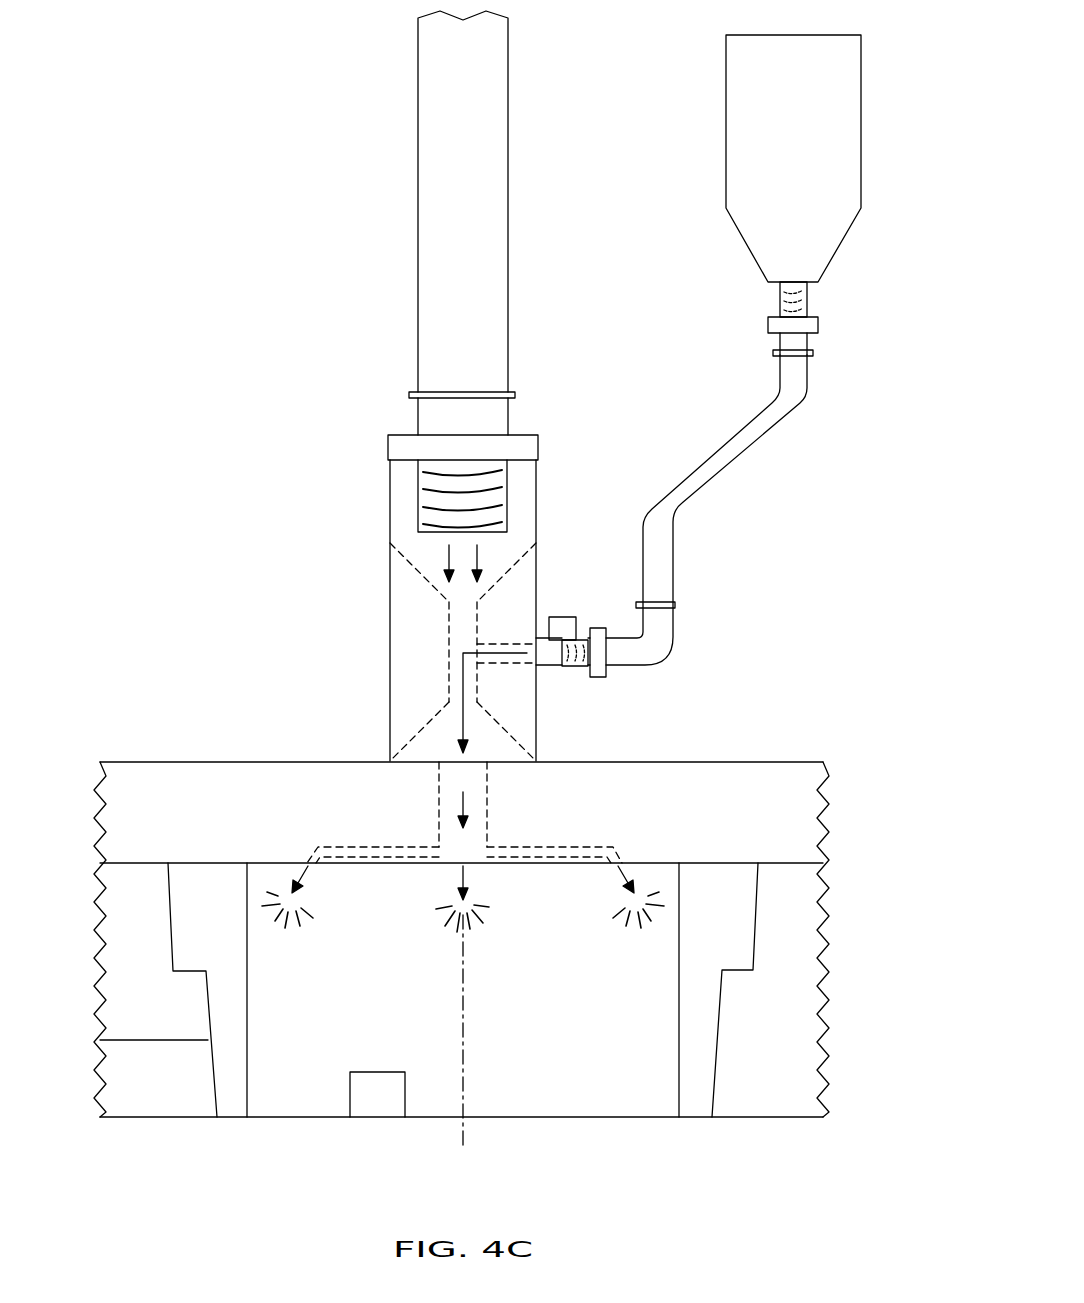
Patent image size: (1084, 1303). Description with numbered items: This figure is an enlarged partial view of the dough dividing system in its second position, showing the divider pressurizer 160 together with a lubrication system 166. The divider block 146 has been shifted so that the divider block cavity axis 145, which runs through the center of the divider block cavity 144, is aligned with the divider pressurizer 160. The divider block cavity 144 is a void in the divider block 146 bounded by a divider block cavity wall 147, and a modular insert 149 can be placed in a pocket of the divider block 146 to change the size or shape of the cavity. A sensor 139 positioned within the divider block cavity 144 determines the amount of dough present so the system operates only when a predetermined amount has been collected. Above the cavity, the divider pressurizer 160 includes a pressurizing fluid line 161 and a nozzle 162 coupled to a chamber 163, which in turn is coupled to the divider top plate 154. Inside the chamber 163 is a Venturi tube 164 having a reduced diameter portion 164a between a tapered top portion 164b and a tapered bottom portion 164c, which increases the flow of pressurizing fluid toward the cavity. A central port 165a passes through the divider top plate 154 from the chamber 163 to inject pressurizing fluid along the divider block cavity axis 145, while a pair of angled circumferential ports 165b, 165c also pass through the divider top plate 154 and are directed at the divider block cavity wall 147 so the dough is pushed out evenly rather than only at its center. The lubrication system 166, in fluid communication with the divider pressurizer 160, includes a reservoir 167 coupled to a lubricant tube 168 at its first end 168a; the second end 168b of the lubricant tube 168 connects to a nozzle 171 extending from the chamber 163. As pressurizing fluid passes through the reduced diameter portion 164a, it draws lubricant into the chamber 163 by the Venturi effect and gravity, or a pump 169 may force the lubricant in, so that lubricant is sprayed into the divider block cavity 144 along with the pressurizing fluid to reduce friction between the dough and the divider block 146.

The sensor 139 is at (378, 1103).
The divider block cavity 144 is at (642, 1098).
The divider block cavity axis 145 is at (463, 1137).
The divider block 146 is at (122, 988).
The divider block cavity wall 147 is at (247, 1098).
The modular insert 149 is at (200, 883).
The divider top plate 154 is at (735, 783).
The divider pressurizer 160 is at (364, 182).
The pressurizing fluid line 161 is at (418, 292).
The nozzle 162 is at (507, 492).
The chamber 163 is at (390, 603).
The Venturi tube 164 is at (376, 524).
The reduced diameter portion 164a is at (449, 640).
The tapered top portion 164b is at (405, 562).
The tapered bottom portion 164c is at (408, 745).
The central port 165a is at (487, 778).
The circumferential port 165b is at (312, 845).
The circumferential port 165c is at (614, 845).
The lubrication system 166 is at (892, 193).
The reservoir 167 is at (726, 128).
The lubricant tube 168 is at (745, 465).
The first end 168a is at (808, 300).
The second end 168b is at (597, 677).
The pump 169 is at (563, 617).
The nozzle 171 is at (555, 667).